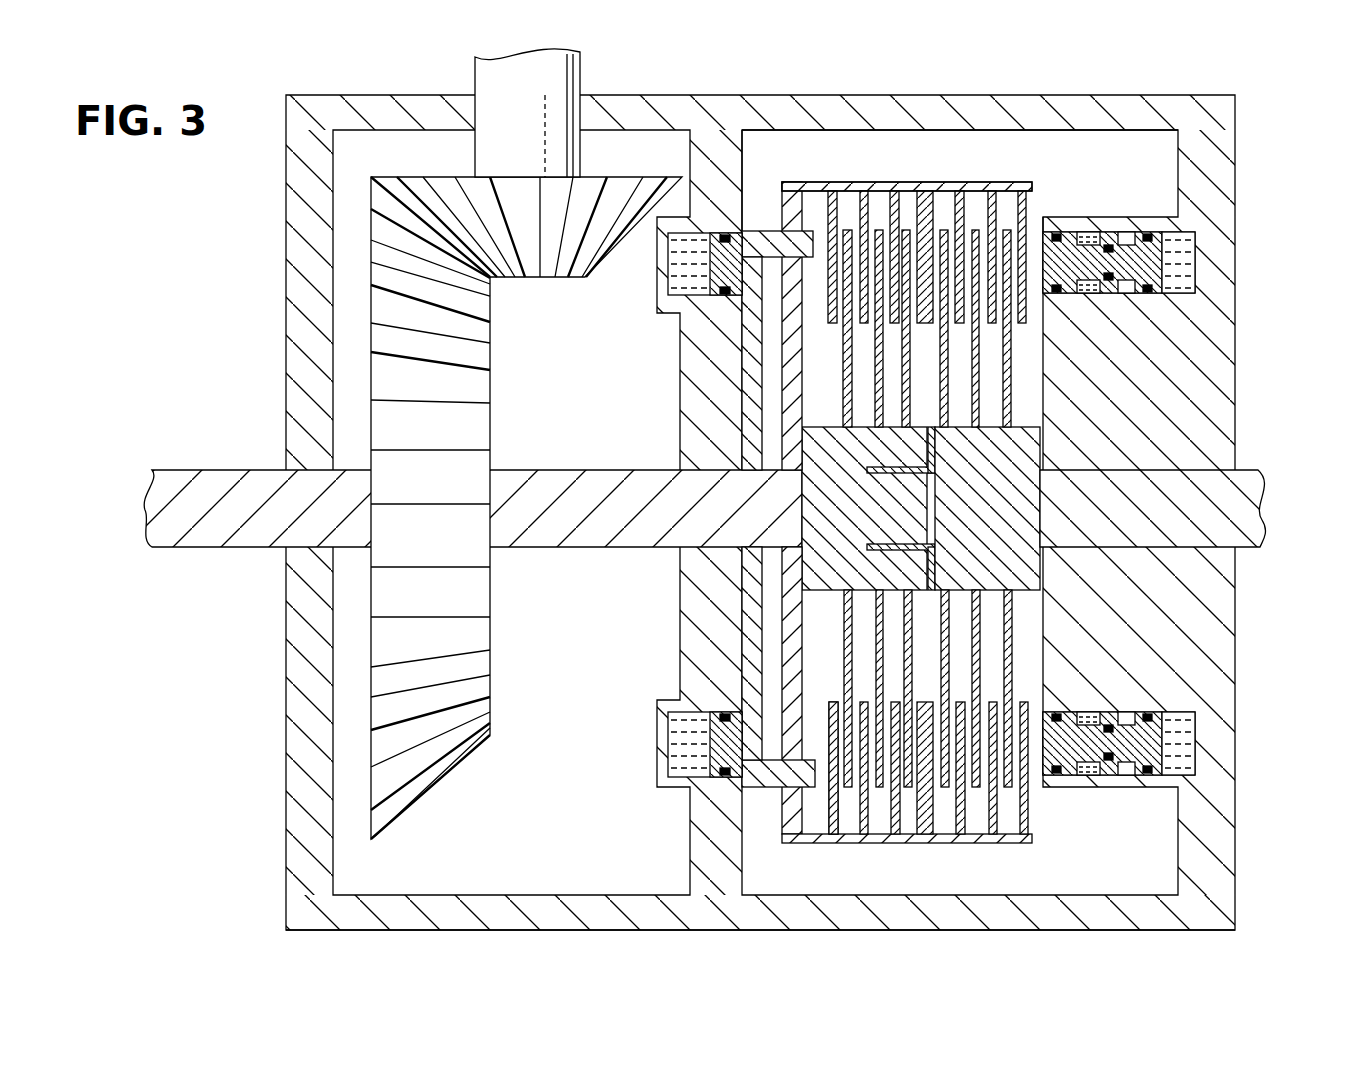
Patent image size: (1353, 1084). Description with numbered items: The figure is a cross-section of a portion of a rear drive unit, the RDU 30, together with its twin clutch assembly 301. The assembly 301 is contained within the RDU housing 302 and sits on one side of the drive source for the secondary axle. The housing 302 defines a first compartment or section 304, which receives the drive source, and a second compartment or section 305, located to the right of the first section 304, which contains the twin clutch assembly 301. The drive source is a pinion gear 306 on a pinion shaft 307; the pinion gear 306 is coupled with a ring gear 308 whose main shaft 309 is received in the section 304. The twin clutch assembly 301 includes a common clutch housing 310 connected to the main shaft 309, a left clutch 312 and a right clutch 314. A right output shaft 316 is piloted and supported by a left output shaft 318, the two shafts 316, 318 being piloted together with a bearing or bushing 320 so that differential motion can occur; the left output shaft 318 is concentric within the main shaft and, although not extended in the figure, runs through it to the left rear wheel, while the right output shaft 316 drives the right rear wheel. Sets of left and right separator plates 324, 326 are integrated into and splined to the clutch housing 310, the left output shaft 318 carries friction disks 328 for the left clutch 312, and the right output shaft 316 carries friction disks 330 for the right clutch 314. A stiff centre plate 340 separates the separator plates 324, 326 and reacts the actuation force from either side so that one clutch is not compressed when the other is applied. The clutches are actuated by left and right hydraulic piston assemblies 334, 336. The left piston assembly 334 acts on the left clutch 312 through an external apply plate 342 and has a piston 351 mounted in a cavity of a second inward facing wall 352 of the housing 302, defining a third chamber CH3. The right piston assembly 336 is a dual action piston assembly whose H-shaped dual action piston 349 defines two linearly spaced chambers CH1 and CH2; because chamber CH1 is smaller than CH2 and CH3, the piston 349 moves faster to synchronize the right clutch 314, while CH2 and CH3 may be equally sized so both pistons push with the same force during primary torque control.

The rear drive unit 30 is at (186, 788).
The twin clutch assembly 301 is at (932, 155).
The RDU housing 302 is at (293, 210).
The first compartment or section 304 is at (510, 933).
The second compartment or section 305 is at (1106, 933).
The pinion gear 306 is at (416, 185).
The pinion shaft 307 is at (582, 72).
The ring gear 308 is at (450, 491).
The main shaft 309 is at (218, 487).
The common clutch housing 310 is at (1008, 192).
The left clutch 312 is at (846, 951).
The right clutch 314 is at (1013, 951).
The right output shaft 316 is at (1265, 505).
The left output shaft 318 is at (830, 548).
The bearing or bushing 320 is at (938, 455).
The left separator plates 324 is at (826, 823).
The right separator plates 326 is at (1036, 815).
The friction disks 328 is at (834, 383).
The friction disks 330 is at (1015, 377).
The left hydraulic piston assembly 334 is at (654, 762).
The right hydraulic piston assembly 336 is at (1188, 467).
The centre plate 340 is at (925, 195).
The external apply plate 342 is at (768, 790).
The dual action piston 349 is at (1150, 265).
The piston 351 is at (649, 297).
The second inward facing wall 352 is at (750, 165).
The first chamber CH1 is at (1085, 236).
The second chamber CH2 is at (1180, 258).
The third chamber CH3 is at (690, 262).